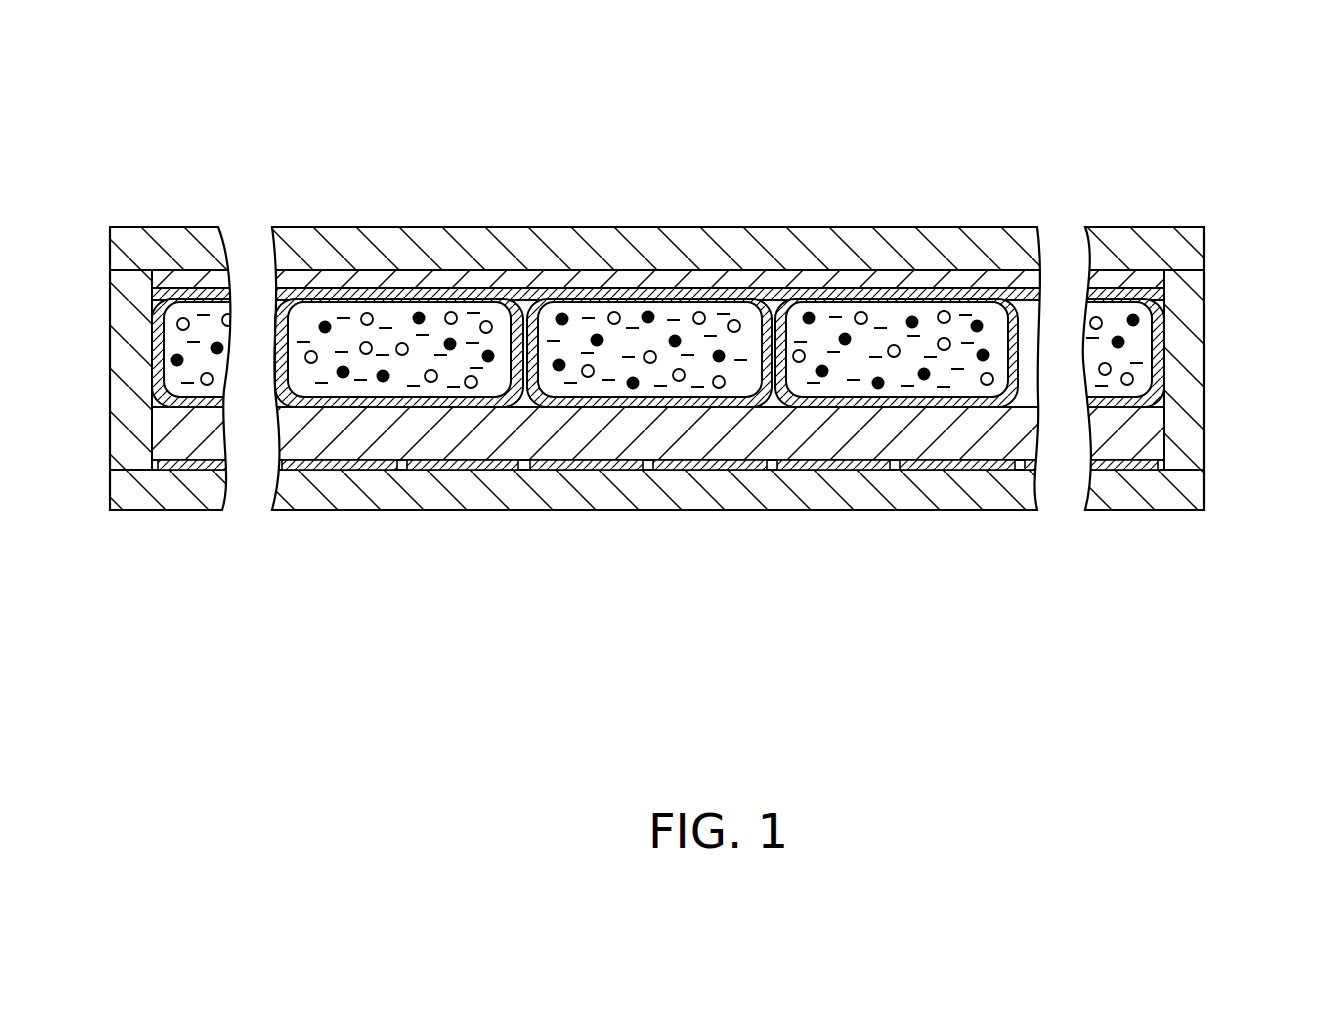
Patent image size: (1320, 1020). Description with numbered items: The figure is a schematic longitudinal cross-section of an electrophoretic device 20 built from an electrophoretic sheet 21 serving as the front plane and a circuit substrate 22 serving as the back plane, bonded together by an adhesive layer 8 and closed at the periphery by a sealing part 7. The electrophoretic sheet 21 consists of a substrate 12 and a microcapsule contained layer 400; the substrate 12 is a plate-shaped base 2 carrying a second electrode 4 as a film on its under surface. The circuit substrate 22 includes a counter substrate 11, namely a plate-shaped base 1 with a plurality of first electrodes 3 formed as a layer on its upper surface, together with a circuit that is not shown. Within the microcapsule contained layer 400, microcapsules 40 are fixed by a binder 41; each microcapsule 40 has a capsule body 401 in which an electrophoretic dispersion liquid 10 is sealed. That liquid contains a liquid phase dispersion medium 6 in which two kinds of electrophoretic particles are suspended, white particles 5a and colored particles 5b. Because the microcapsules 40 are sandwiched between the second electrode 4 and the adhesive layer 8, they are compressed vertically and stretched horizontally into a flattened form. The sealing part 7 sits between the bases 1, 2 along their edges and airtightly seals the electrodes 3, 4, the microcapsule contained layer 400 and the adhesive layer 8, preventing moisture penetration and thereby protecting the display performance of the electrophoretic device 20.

The base 1 is at (733, 495).
The base 2 is at (822, 252).
The first electrodes 3 is at (700, 466).
The second electrode 4 is at (718, 284).
The white particle 5a is at (893, 357).
The colored particle 5b is at (345, 378).
The liquid phase dispersion medium 6 is at (452, 375).
The sealing part 7 is at (130, 453).
The adhesive layer 8 is at (1134, 432).
The electrophoretic dispersion liquid 10 is at (360, 565).
The counter substrate 11 is at (655, 561).
The substrate 12 is at (655, 181).
The electrophoretic device 20 is at (1035, 129).
The electrophoretic sheet 21 is at (1236, 234).
The circuit substrate 22 is at (1234, 504).
The microcapsules 40 is at (526, 279).
The binder 41 is at (288, 298).
The microcapsule contained layer 400 is at (707, 394).
The capsule body 401 is at (390, 297).